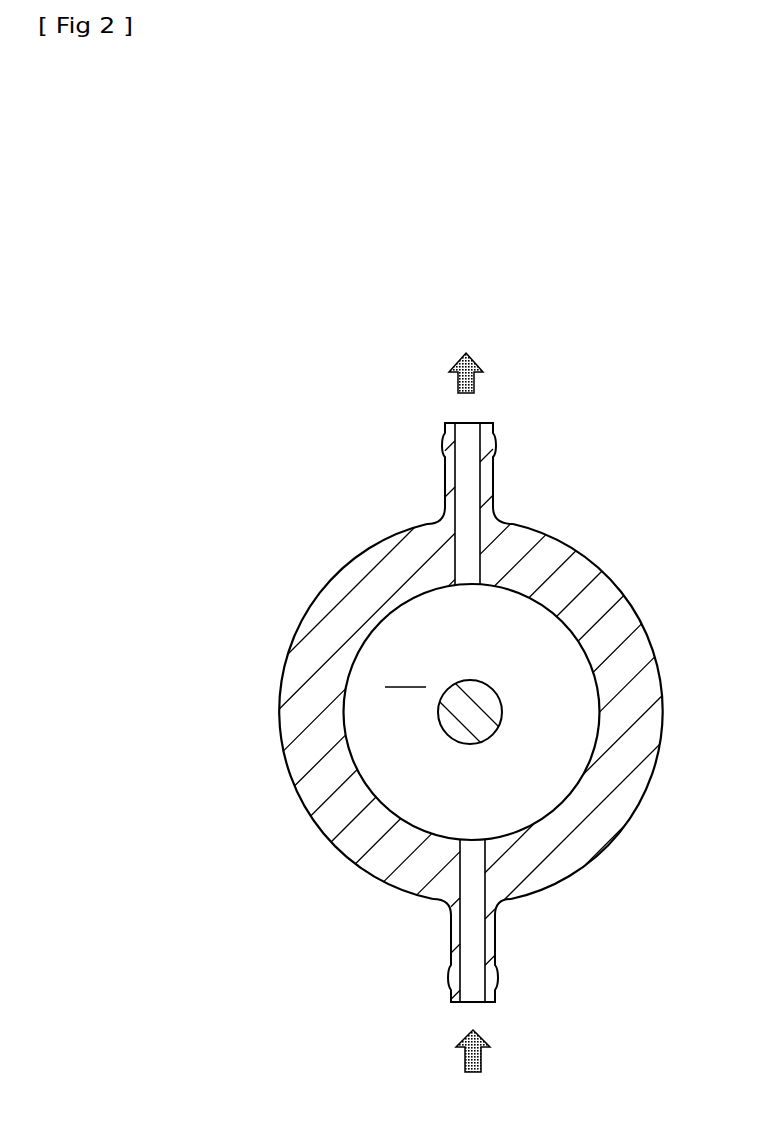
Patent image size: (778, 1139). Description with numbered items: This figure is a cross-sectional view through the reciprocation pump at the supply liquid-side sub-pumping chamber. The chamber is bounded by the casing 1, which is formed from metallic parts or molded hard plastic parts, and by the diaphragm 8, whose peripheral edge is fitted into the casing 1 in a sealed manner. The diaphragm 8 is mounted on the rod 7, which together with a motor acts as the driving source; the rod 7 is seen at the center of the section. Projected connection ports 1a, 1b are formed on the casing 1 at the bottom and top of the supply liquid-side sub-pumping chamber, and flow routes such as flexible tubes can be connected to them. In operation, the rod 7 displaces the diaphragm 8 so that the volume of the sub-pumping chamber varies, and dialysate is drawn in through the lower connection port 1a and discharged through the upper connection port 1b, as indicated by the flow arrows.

The casing 1 is at (296, 625).
The connection port 1a is at (451, 947).
The connection port 1b is at (445, 473).
The rod 7 is at (490, 727).
The diaphragm 8 is at (563, 689).